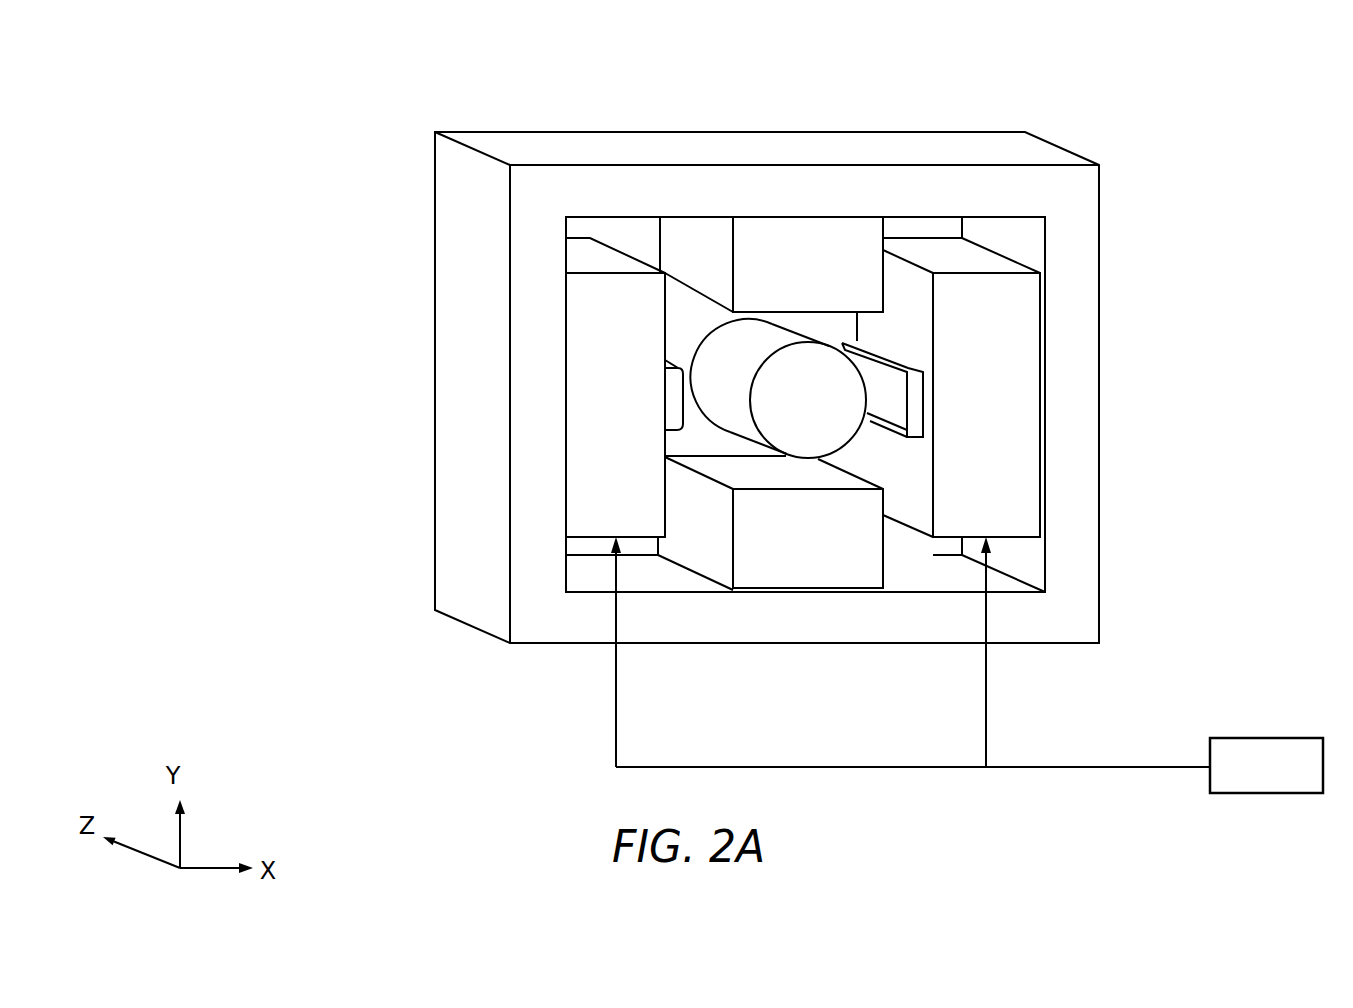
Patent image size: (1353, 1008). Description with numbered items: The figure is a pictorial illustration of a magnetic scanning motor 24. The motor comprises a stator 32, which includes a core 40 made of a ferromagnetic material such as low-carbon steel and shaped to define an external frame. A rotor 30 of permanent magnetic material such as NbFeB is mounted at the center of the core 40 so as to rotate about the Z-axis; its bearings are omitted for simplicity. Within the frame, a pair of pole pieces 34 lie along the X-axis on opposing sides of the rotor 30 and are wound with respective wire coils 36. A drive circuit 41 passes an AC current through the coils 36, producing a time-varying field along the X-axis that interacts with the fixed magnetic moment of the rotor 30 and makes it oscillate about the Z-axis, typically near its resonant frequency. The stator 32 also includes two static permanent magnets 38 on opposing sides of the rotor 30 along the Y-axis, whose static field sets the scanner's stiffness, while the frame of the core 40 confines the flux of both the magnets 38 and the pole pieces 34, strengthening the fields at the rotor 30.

The magnetic scanning motor 24 is at (340, 87).
The rotor 30 is at (793, 416).
The stator 32 is at (422, 132).
The pole pieces 34 is at (912, 402).
The wire coils 36 is at (616, 298).
The static permanent magnets 38 is at (857, 237).
The core 40 is at (762, 132).
The drive circuit 41 is at (1263, 738).